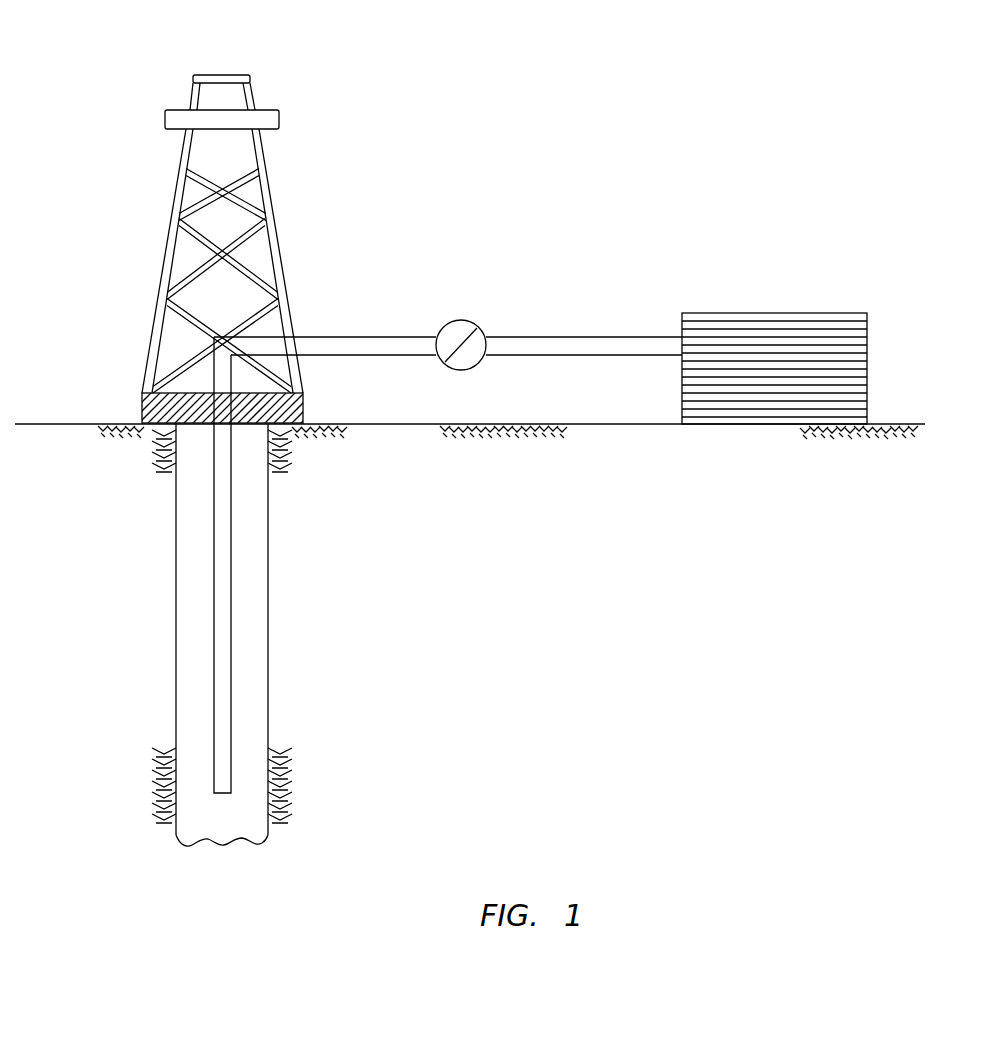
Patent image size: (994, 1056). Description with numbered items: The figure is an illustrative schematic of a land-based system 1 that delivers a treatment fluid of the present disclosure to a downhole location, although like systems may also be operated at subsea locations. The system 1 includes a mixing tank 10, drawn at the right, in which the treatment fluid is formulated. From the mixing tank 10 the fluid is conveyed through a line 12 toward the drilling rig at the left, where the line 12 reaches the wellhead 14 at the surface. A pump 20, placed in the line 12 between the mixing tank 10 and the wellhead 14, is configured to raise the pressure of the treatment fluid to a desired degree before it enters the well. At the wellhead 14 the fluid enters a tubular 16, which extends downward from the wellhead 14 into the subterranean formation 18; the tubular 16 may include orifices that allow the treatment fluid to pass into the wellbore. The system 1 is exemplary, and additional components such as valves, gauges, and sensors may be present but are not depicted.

The system 1 is at (97, 78).
The mixing tank 10 is at (853, 313).
The line 12 is at (367, 337).
The wellhead 14 is at (140, 407).
The tubular 16 is at (232, 548).
The subterranean formation 18 is at (91, 649).
The pump 20 is at (472, 321).